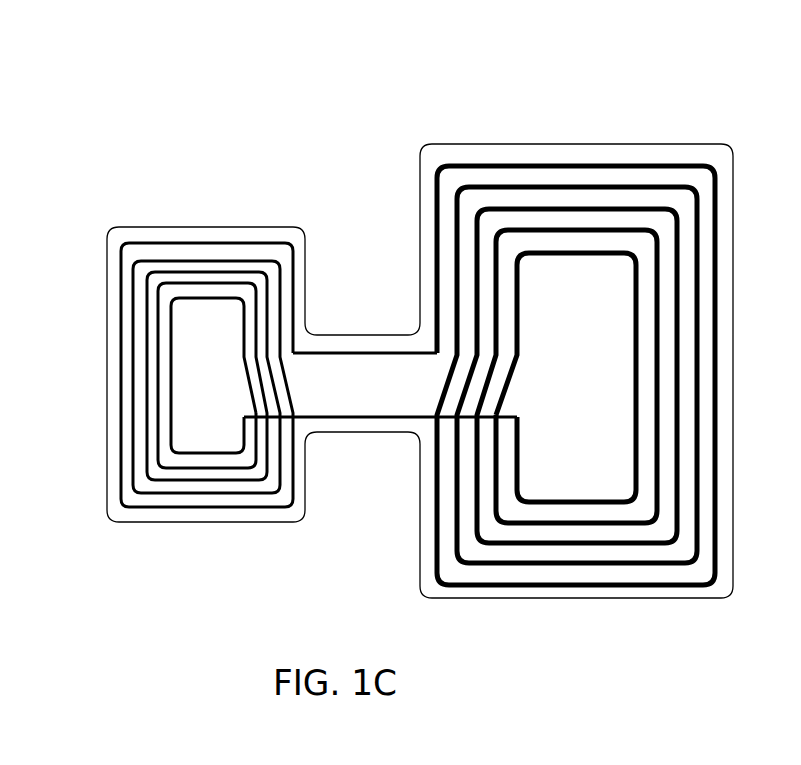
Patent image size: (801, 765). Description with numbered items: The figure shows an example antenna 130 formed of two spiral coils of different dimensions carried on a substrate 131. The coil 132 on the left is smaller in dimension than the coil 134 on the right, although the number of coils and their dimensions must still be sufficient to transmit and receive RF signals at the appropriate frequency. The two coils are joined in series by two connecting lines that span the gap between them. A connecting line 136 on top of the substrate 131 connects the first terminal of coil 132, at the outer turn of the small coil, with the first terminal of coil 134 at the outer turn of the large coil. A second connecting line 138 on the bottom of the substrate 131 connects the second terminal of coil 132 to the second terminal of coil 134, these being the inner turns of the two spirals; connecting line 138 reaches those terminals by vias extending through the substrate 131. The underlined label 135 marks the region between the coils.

The antenna 130 is at (198, 237).
The substrate 131 is at (558, 157).
The coil 132 is at (176, 468).
The coil 134 is at (542, 497).
The gap between coils 135 is at (392, 389).
The connecting line 136 is at (373, 352).
The connecting line 138 is at (317, 398).